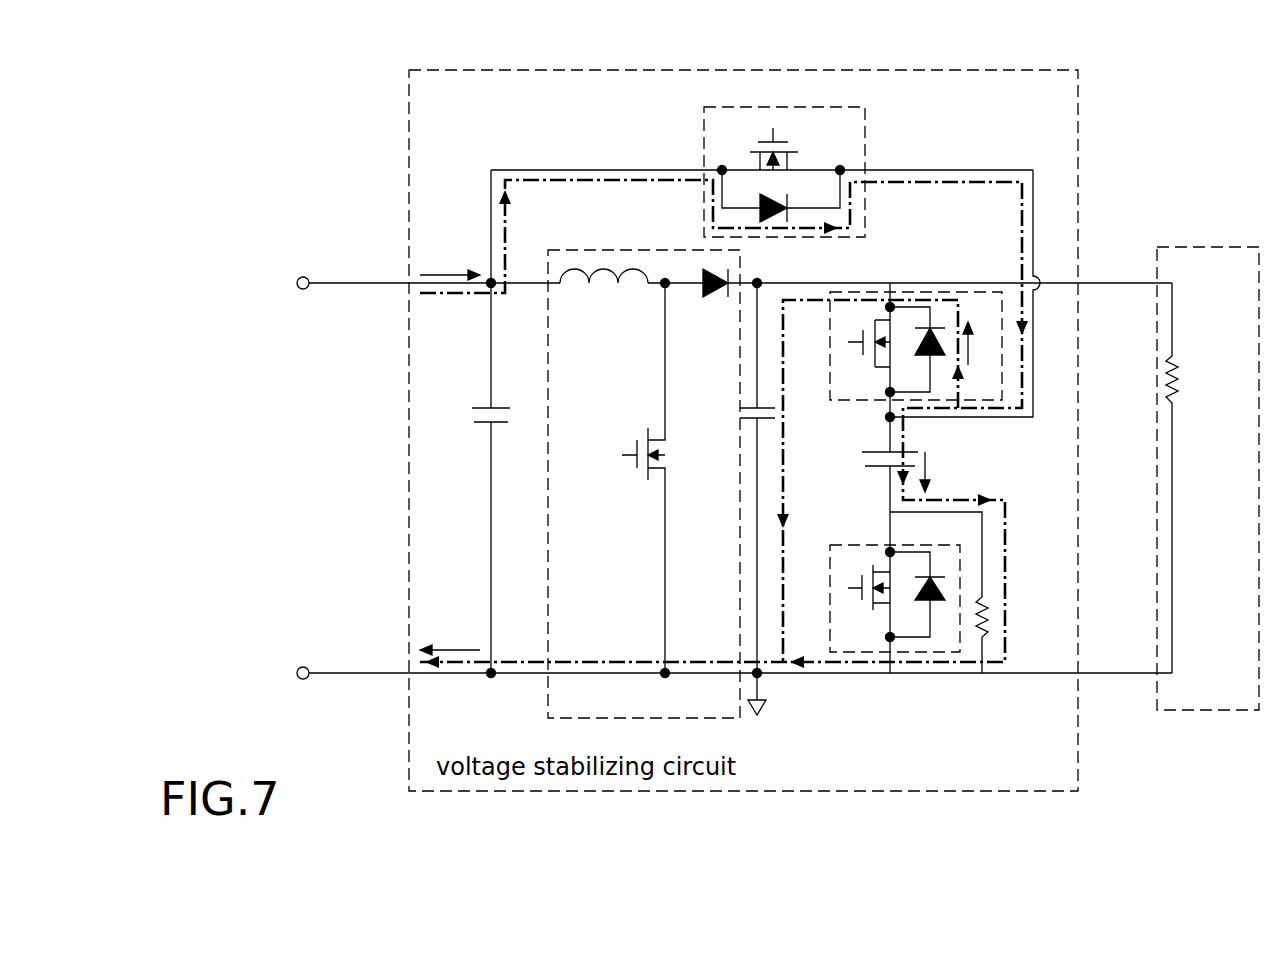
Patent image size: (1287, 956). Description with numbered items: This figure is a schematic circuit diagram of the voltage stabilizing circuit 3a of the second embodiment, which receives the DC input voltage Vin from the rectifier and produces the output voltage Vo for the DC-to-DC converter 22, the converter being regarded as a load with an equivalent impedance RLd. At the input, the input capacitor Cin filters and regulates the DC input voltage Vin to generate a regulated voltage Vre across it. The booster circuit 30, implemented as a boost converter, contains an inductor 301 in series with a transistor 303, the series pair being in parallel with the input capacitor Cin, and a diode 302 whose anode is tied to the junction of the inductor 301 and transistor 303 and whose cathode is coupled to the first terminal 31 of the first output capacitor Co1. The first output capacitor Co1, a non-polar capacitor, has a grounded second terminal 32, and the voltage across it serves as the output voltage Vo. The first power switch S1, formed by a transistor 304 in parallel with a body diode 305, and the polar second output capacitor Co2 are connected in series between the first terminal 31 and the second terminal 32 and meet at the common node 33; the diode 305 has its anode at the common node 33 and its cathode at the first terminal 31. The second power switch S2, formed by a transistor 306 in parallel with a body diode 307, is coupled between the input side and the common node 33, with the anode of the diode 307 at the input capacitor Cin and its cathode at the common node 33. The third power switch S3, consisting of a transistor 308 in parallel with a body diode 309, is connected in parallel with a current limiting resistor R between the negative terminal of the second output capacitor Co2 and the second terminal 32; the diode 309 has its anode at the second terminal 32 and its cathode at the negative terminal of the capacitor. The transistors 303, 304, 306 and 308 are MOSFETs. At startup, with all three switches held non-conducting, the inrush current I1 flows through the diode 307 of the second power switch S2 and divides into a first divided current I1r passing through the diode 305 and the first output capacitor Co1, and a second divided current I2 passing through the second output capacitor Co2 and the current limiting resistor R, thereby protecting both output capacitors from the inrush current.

The voltage stabilizing circuit 3a is at (888, 70).
The DC-to-DC converter 22 is at (1208, 245).
The booster circuit 30 is at (626, 248).
The first terminal of the first output capacitor 31 is at (762, 280).
The second terminal of the first output capacitor 32 is at (767, 676).
The common node 33 is at (895, 420).
The inductor 301 is at (603, 270).
The diode 302 is at (707, 297).
The transistor 303 is at (703, 430).
The transistor 304 is at (870, 366).
The diode 305 is at (942, 332).
The transistor 306 is at (758, 150).
The diode 307 is at (760, 208).
The transistor 308 is at (871, 606).
The diode 309 is at (927, 580).
The first power switch S1 is at (907, 292).
The second power switch S2 is at (866, 137).
The third power switch S3 is at (930, 655).
The first output capacitor Co1 is at (768, 405).
The second output capacitor Co2 is at (915, 470).
The input capacitor Cin is at (486, 424).
The current limiting resistor R is at (990, 630).
The equivalent impedance RLd is at (1194, 478).
The DC input voltage Vin is at (711, 478).
The output voltage Vo is at (1130, 479).
The regulated voltage Vre is at (516, 482).
The inrush current I1 is at (450, 448).
The first divided current I1r is at (979, 345).
The second divided current I2 is at (938, 473).